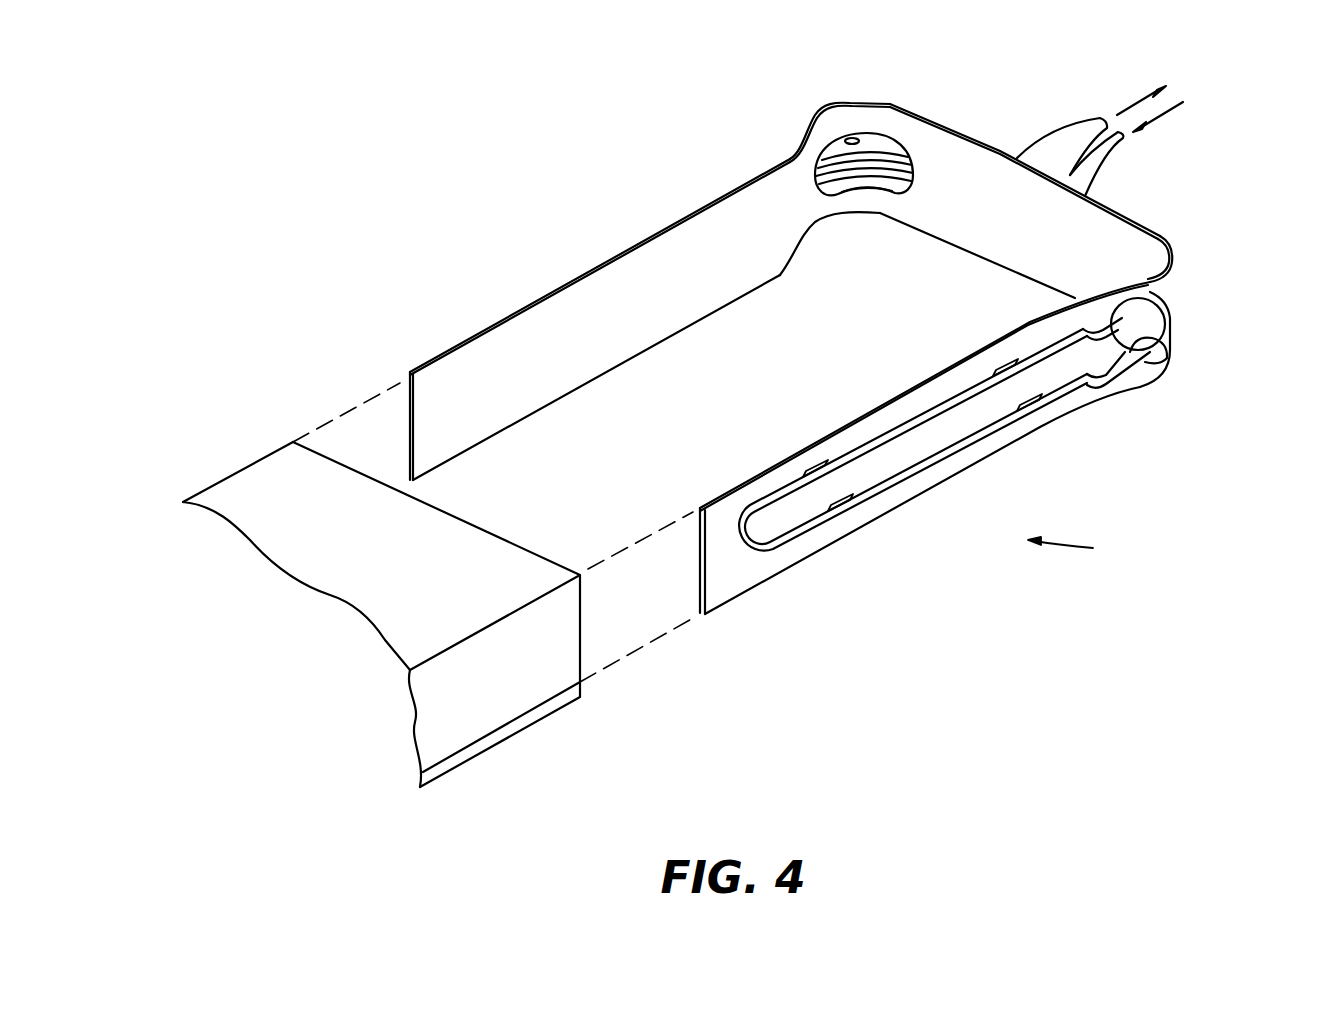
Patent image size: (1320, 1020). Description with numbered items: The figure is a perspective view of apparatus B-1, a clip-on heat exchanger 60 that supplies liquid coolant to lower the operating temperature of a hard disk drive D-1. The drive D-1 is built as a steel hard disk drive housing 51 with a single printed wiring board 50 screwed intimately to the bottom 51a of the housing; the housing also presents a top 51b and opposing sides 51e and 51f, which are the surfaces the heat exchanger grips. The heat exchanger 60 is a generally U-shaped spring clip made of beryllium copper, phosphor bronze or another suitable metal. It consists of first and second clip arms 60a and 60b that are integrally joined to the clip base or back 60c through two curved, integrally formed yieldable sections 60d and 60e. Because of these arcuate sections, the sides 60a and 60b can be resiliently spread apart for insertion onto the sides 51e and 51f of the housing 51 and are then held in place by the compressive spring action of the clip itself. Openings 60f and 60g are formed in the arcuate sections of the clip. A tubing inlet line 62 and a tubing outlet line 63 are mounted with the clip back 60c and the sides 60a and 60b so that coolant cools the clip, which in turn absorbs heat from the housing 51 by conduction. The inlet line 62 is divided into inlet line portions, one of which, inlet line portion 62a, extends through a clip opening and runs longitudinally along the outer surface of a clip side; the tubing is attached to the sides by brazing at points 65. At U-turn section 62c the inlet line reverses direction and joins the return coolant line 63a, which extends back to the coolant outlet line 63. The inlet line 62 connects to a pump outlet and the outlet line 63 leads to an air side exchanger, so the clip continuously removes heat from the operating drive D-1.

The printed wiring board 50 is at (463, 763).
The hard disk drive housing 51 is at (270, 452).
The bottom of hard disk drive housing 51a is at (535, 708).
The top of hard disk drive housing 51b is at (436, 556).
The side of hard disk drive housing 51e is at (548, 636).
The side of hard disk drive housing 51f is at (232, 474).
The clip-on heat exchanger 60 is at (843, 351).
The first clip arm 60a is at (638, 268).
The second clip arm 60b is at (780, 562).
The clip base 60c is at (967, 170).
The arcuate yieldable section 60d is at (813, 113).
The arcuate yieldable section 60e is at (1172, 268).
The clip opening 60f is at (1148, 338).
The clip opening 60g is at (858, 138).
The tubing inlet line 62 is at (1103, 157).
The first inlet line portion 62a is at (990, 435).
The U-turn section 62c is at (737, 553).
The tubing outlet line 63 is at (1060, 142).
The tubing outlet line portion 63a is at (918, 418).
The brazing points 65 is at (810, 467).
The hard disk drive D-1 is at (452, 728).
The apparatus B-1 is at (1086, 548).